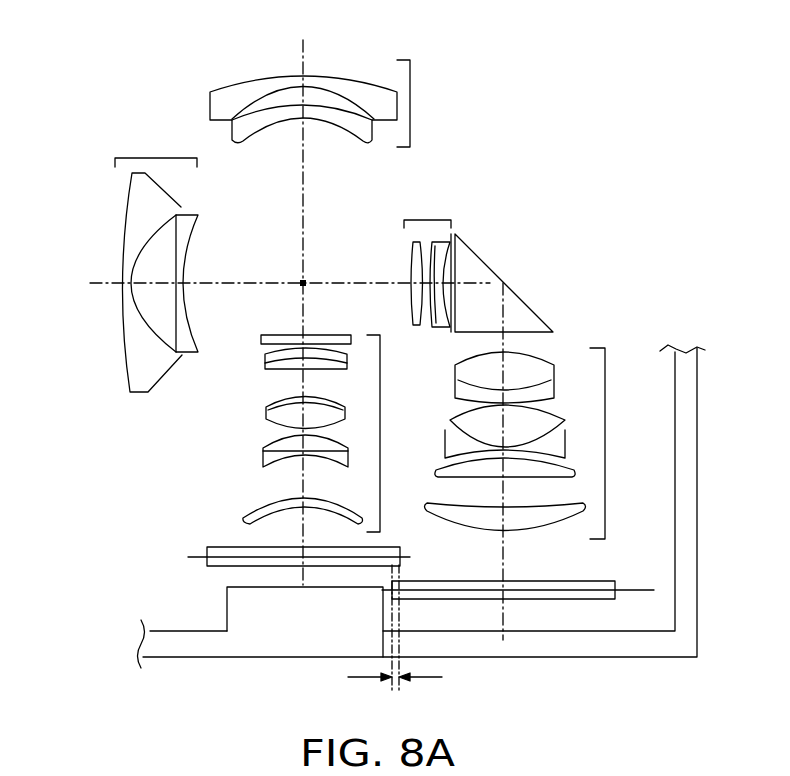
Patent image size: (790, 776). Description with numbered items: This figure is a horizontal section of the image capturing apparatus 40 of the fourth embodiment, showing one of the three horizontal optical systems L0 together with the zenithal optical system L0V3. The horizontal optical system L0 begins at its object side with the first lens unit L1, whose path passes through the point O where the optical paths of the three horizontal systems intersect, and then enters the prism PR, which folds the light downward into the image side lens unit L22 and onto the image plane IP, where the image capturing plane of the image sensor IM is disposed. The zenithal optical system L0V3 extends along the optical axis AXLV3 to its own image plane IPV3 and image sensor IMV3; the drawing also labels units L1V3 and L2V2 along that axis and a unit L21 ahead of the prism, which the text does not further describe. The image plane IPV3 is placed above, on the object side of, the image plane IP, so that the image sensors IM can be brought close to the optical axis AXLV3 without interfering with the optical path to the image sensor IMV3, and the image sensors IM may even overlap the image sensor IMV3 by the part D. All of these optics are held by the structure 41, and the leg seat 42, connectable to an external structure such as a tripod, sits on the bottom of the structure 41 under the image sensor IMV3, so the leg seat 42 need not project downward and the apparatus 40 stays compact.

The image capturing apparatus 40 is at (125, 80).
The optical axis of the zenithal optical system AXLV3 is at (303, 50).
The zenithal optical system L0V3 is at (337, 66).
The first lens unit of third optical system L1V3 is at (438, 103).
The horizontal optical system L0 is at (100, 256).
The first lens unit L1 is at (156, 242).
The intersection point of optical paths O is at (290, 268).
The second lens unit front sub-unit L21 is at (428, 259).
The prism PR is at (512, 303).
The second lens unit of third optical system L2V2 is at (348, 433).
The image side lens unit L22 is at (544, 443).
The image sensor of the zenithal optical system IMV3 is at (227, 547).
The image plane of the zenithal optical system IPV3 is at (198, 553).
The leg seat 42 is at (280, 650).
The structure 41 is at (530, 645).
The image sensor IM is at (585, 600).
The image plane IP is at (642, 593).
The overlap part D is at (405, 631).